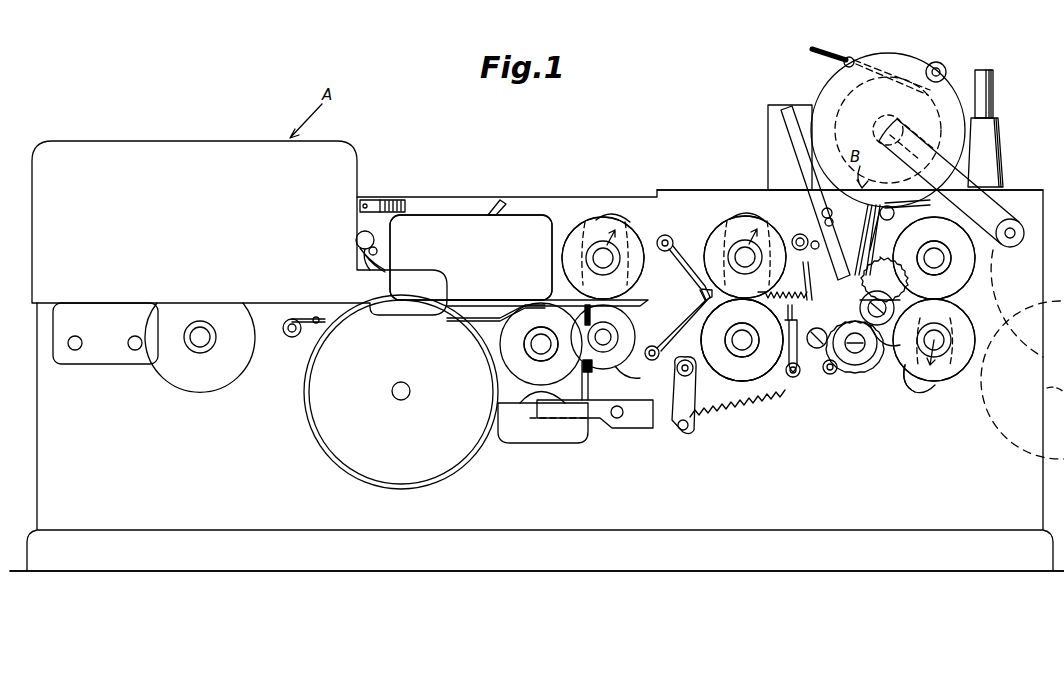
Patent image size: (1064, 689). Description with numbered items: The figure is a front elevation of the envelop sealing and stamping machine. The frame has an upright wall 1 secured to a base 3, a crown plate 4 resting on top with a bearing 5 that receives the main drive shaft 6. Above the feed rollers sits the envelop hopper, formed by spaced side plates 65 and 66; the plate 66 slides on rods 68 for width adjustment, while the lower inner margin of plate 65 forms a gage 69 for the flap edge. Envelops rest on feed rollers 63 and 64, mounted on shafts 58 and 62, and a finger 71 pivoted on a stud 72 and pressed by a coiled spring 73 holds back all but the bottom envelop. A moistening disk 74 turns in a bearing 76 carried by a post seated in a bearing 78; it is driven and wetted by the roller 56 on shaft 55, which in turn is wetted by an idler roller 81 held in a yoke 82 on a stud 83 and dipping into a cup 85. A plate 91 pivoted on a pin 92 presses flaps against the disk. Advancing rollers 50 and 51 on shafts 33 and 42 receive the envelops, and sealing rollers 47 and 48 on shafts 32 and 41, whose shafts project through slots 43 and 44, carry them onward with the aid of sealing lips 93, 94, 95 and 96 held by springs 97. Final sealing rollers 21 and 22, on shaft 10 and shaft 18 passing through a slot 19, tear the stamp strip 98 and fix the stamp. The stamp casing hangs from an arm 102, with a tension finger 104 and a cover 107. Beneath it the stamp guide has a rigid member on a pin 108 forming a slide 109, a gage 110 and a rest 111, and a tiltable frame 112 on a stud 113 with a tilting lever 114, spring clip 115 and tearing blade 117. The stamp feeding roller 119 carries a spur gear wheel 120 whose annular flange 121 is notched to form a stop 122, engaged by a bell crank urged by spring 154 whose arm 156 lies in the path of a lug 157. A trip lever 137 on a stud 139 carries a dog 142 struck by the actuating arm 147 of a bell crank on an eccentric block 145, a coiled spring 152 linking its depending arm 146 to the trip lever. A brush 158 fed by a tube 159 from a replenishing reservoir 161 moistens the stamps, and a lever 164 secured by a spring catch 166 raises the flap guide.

The wall 1 is at (580, 193).
The base 3 is at (600, 573).
The crown plate 4 is at (1025, 189).
The bearing 5 is at (1003, 155).
The main drive shaft 6 is at (993, 96).
The shaft 10 is at (945, 262).
The shaft 18 is at (938, 344).
The slot 19 is at (922, 390).
The roller 21 is at (950, 280).
The roller 22 is at (948, 375).
The shaft 32 is at (738, 346).
The shaft 33 is at (610, 336).
The shaft 41 is at (750, 256).
The shaft 42 is at (600, 262).
The slot 43 is at (750, 218).
The slot 44 is at (625, 215).
The roller 47 is at (691, 395).
The roller 48 is at (718, 235).
The roller 50 is at (635, 378).
The roller 51 is at (590, 238).
The shaft 55 is at (541, 336).
The disk-driving and moistening roller 56 is at (541, 351).
The shaft 58 is at (402, 400).
The shaft 62 is at (205, 327).
The feed roller 63 is at (348, 442).
The feed roller 64 is at (218, 382).
The side plate 65 is at (440, 215).
The side plate 66 is at (239, 228).
The rods 68 is at (130, 340).
The gage 69 is at (485, 295).
The finger 71 is at (385, 268).
The stud 72 is at (355, 255).
The coiled spring 73 is at (378, 244).
The moistening disk 74 is at (640, 302).
The bearing 76 is at (590, 313).
The bearing 78 is at (590, 385).
The idler roller 81 is at (525, 395).
The yoke 82 is at (650, 428).
The stud 83 is at (615, 418).
The cup 85 is at (530, 440).
The plate 91 is at (490, 324).
The pin 92 is at (290, 337).
The sealing lip 93 is at (690, 270).
The sealing lip 94 is at (677, 325).
The sealing lip 95 is at (808, 268).
The sealing lip 96 is at (858, 366).
The springs 97 is at (670, 232).
The stamp strip 98 is at (866, 239).
The arm 102 is at (988, 218).
The tension finger 104 is at (848, 56).
The cover 107 is at (945, 80).
The pin 108 is at (902, 213).
The slide 109 is at (889, 240).
The gage 110 is at (880, 205).
The rest 111 is at (924, 209).
The frame 112 is at (810, 229).
The stud 113 is at (822, 210).
The tilting lever 114 is at (805, 140).
The spring clip 115 is at (864, 240).
The tearing blade 117 is at (905, 296).
The stamp feeding roller 119 is at (894, 279).
The spur gear wheel 120 is at (895, 290).
The annular flange 121 is at (920, 255).
The stop 122 is at (905, 240).
The trip lever 137 is at (742, 340).
The stud 139 is at (790, 380).
The dog 142 is at (750, 342).
The eccentric block 145 is at (675, 375).
The depending arm 146 is at (690, 430).
The actuating arm 147 is at (712, 346).
The coiled spring 152 is at (737, 412).
The spring 154 is at (762, 283).
The arm 156 is at (815, 284).
The lug 157 is at (788, 312).
The brush 158 is at (912, 325).
The tube 159 is at (831, 323).
The replenishing reservoir 161 is at (768, 130).
The lever 164 is at (504, 207).
The spring catch 166 is at (390, 200).